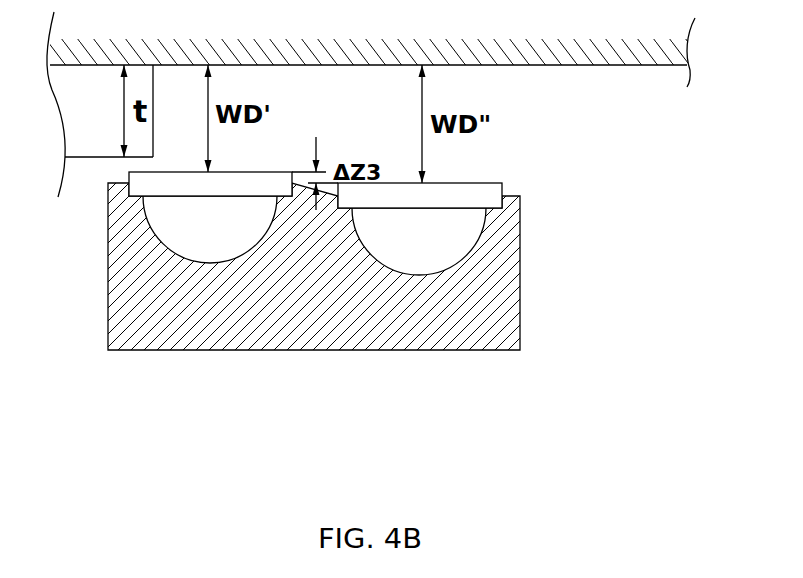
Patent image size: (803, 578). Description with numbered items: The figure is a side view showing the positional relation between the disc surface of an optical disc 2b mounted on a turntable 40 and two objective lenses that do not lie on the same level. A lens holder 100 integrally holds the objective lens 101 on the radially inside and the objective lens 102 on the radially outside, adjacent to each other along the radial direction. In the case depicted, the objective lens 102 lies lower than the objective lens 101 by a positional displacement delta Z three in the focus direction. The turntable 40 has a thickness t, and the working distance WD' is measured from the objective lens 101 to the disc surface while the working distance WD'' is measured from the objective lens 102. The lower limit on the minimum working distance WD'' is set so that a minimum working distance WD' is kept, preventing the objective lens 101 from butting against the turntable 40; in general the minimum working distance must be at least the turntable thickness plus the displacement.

The turntable 40 is at (106, 121).
The optical disc 2b is at (613, 65).
The lens holder 100 is at (314, 266).
The objective lens 101 is at (234, 237).
The objective lens 102 is at (442, 249).